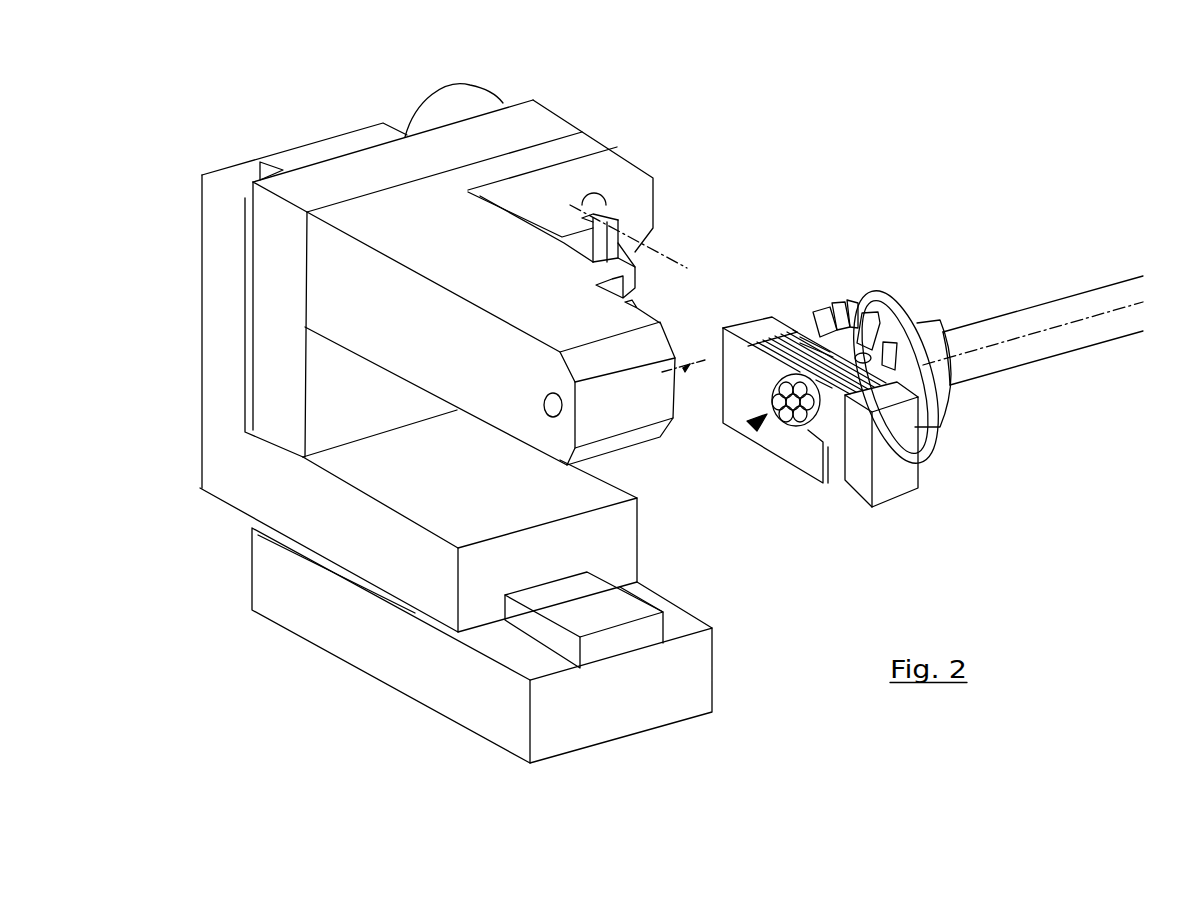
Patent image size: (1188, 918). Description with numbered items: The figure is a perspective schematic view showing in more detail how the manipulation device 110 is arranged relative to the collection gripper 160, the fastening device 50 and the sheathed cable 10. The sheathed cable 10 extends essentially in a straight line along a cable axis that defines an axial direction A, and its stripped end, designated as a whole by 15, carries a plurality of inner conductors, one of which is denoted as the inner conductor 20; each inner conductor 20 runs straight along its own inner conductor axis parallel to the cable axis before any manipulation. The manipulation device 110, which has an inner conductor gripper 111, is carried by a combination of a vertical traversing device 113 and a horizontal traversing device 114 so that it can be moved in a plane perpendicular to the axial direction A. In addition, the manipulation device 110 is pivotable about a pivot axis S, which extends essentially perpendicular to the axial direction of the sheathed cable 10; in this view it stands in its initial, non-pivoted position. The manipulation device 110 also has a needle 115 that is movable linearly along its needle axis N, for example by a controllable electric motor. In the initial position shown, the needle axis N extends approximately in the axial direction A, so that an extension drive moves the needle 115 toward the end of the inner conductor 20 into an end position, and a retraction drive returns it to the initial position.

The sheathed cable 10 is at (995, 329).
The end of the sheathed cable 15 is at (752, 425).
The inner conductor 20 is at (797, 424).
The fastening device 50 is at (893, 312).
The manipulation device 110 is at (597, 418).
The inner conductor gripper 111 is at (562, 202).
The vertical traversing device 113 is at (350, 170).
The horizontal traversing device 114 is at (418, 598).
The needle 115 is at (683, 367).
The collection gripper 160 is at (905, 487).
The pivot axis S is at (657, 250).
The needle axis N is at (700, 367).
The axial direction A is at (1060, 329).